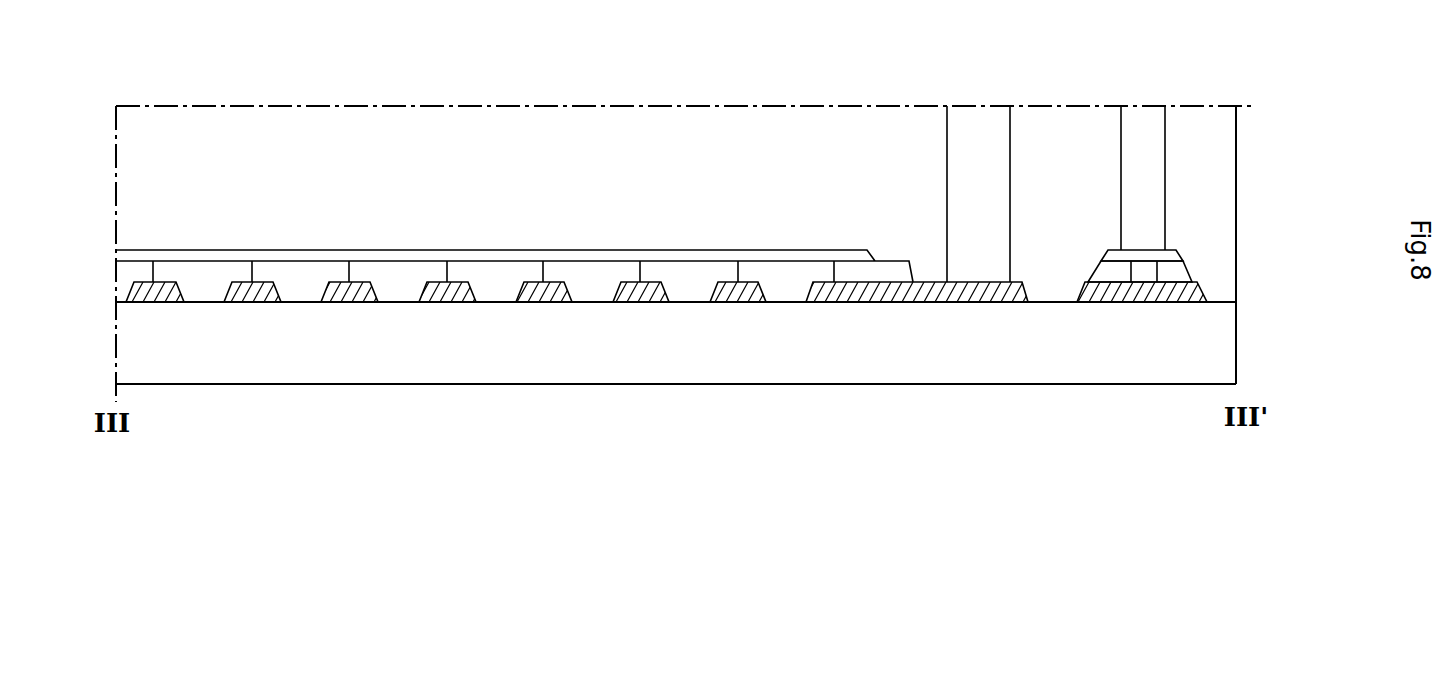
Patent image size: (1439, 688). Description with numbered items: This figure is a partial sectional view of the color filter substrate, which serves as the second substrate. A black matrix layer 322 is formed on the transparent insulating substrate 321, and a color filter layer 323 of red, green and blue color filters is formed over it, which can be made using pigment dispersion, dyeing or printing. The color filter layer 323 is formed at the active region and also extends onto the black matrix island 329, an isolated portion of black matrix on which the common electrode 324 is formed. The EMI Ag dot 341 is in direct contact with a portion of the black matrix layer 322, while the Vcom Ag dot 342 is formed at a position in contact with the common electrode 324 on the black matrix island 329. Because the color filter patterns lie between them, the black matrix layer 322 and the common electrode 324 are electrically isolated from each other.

The transparent insulating substrate 321 is at (1230, 338).
The black matrix layer 322 is at (640, 302).
The color filter layer 323 is at (478, 268).
The common electrode 324 is at (700, 257).
The black matrix island 329 is at (1143, 297).
The EMI Ag dot 341 is at (979, 127).
The Vcom Ag dot 342 is at (1157, 172).